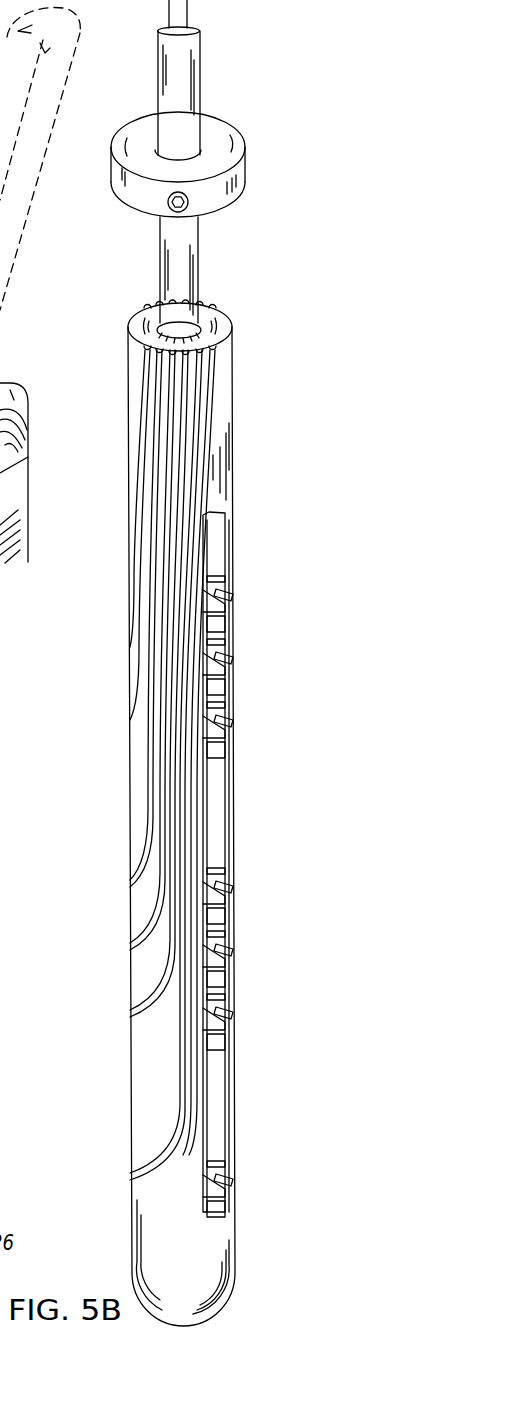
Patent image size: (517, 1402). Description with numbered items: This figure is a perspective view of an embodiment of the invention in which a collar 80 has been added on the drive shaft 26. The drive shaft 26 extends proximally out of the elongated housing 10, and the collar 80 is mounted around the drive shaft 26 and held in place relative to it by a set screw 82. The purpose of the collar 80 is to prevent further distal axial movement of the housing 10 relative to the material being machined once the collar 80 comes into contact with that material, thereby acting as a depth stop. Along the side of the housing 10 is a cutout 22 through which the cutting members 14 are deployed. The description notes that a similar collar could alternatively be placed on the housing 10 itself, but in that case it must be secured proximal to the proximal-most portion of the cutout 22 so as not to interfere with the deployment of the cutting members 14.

The housing 10 is at (223, 363).
The cutting member 14 is at (217, 552).
The cutout 22 is at (222, 513).
The drive shaft 26 is at (183, 250).
The collar 80 is at (215, 123).
The set screw 82 is at (190, 213).